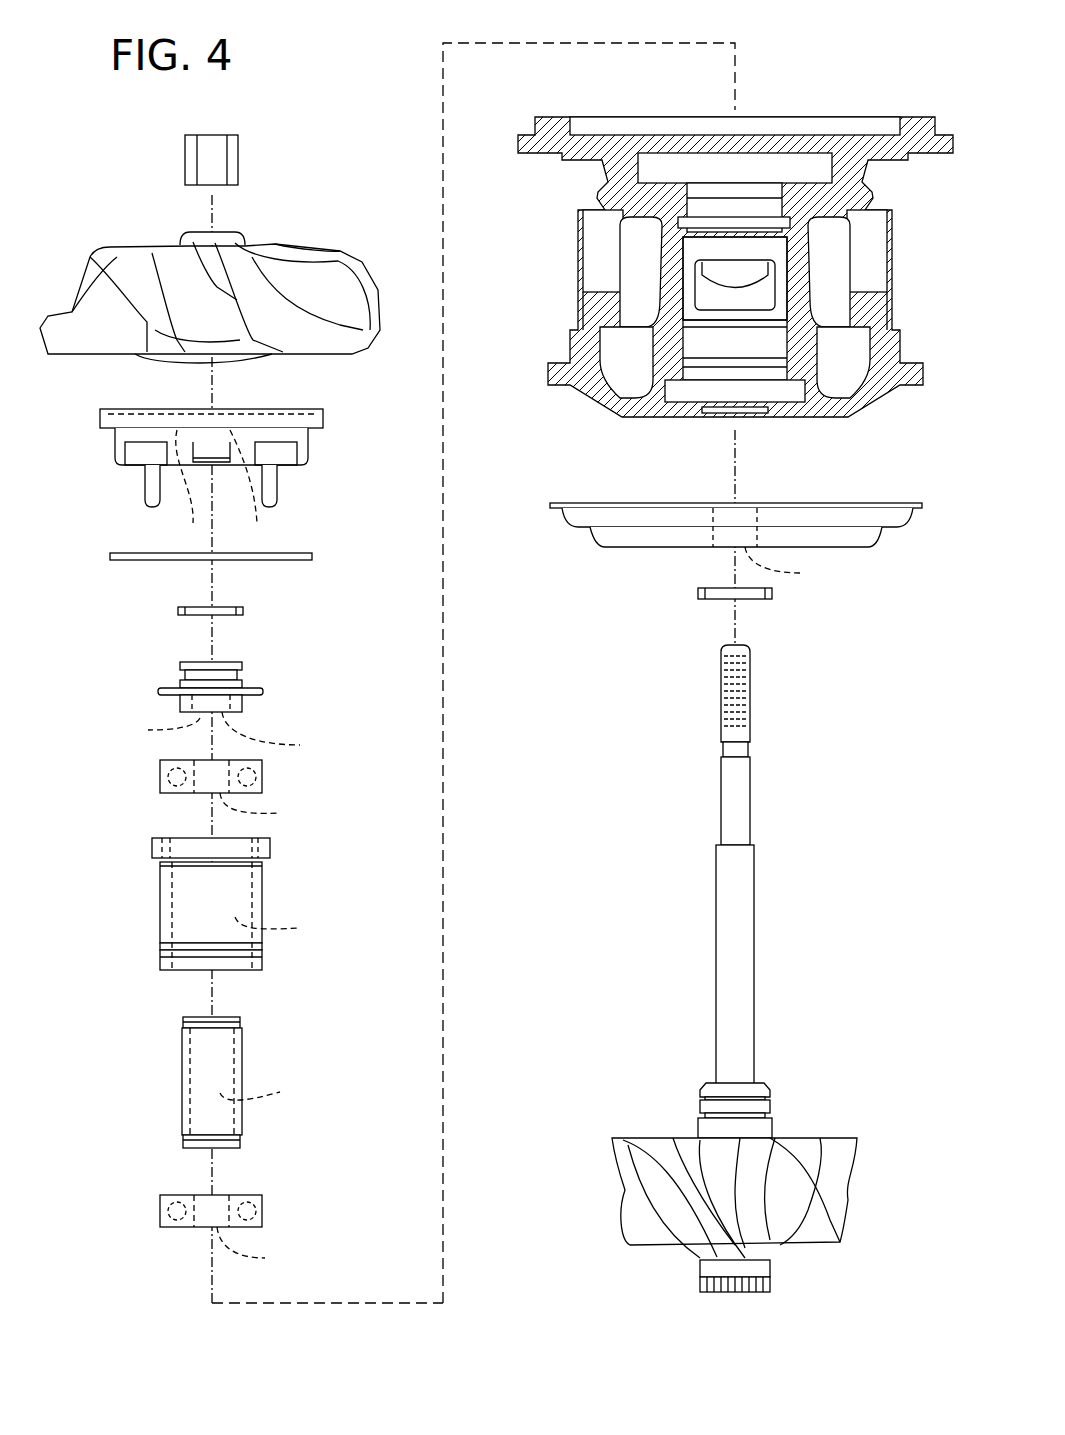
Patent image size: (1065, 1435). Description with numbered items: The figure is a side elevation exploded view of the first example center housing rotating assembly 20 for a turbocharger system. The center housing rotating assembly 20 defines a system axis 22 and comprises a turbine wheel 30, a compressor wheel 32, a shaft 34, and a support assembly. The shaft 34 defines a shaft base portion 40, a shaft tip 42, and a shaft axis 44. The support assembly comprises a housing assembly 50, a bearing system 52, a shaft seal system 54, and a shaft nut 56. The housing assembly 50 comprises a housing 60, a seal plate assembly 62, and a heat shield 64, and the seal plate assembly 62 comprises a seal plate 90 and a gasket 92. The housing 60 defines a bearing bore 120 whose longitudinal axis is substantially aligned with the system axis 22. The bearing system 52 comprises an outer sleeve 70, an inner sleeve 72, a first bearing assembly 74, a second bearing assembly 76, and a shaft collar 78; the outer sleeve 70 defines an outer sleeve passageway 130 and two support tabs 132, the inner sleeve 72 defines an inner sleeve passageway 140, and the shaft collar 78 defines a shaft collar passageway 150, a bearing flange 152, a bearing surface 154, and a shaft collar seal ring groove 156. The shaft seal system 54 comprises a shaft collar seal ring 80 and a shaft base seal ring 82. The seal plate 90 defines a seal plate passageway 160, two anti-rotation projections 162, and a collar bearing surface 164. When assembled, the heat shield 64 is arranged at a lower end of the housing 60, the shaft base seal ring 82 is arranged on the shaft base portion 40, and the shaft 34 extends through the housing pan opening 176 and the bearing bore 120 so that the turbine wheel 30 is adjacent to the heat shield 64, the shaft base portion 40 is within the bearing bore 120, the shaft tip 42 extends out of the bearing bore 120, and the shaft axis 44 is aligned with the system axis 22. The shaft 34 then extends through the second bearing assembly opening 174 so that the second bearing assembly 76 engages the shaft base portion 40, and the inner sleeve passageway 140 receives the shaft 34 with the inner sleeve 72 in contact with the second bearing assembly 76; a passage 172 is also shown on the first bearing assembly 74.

The center housing rotating assembly 20 is at (108, 162).
The system axis 22 is at (208, 212).
The turbine wheel 30 is at (820, 1210).
The compressor wheel 32 is at (284, 262).
The shaft 34 is at (742, 915).
The shaft base portion 40 is at (800, 1112).
The shaft tip 42 is at (764, 674).
The shaft axis 44 is at (748, 628).
The housing assembly 50 is at (80, 409).
The bearing system 52 is at (100, 760).
The shaft seal system 54 is at (165, 620).
The shaft nut 56 is at (232, 160).
The housing 60 is at (885, 318).
The seal plate assembly 62 is at (370, 409).
The heat shield 64 is at (855, 540).
The outer sleeve 70 is at (255, 912).
The inner sleeve 72 is at (238, 1065).
The first bearing assembly 74 is at (255, 765).
The second bearing assembly 76 is at (255, 1198).
The shaft collar 78 is at (165, 677).
The shaft collar seal ring 80 is at (228, 607).
The shaft base seal ring 82 is at (755, 598).
The seal plate 90 is at (288, 408).
The gasket 92 is at (150, 562).
The bearing bore 120 is at (752, 432).
The outer sleeve passageway 130 is at (288, 928).
The support tab 132 is at (155, 850).
The inner sleeve passageway 140 is at (270, 1090).
The shaft collar passageway 150 is at (154, 730).
The bearing flange 152 is at (258, 691).
The bearing surface 154 is at (240, 700).
The shaft collar seal ring groove 156 is at (238, 670).
The seal plate passageway 160 is at (190, 524).
The anti-rotation projection 162 is at (272, 490).
The collar bearing surface 164 is at (257, 524).
The passage 172 is at (280, 808).
The second bearing assembly opening 174 is at (261, 1248).
The housing pan opening 176 is at (793, 565).